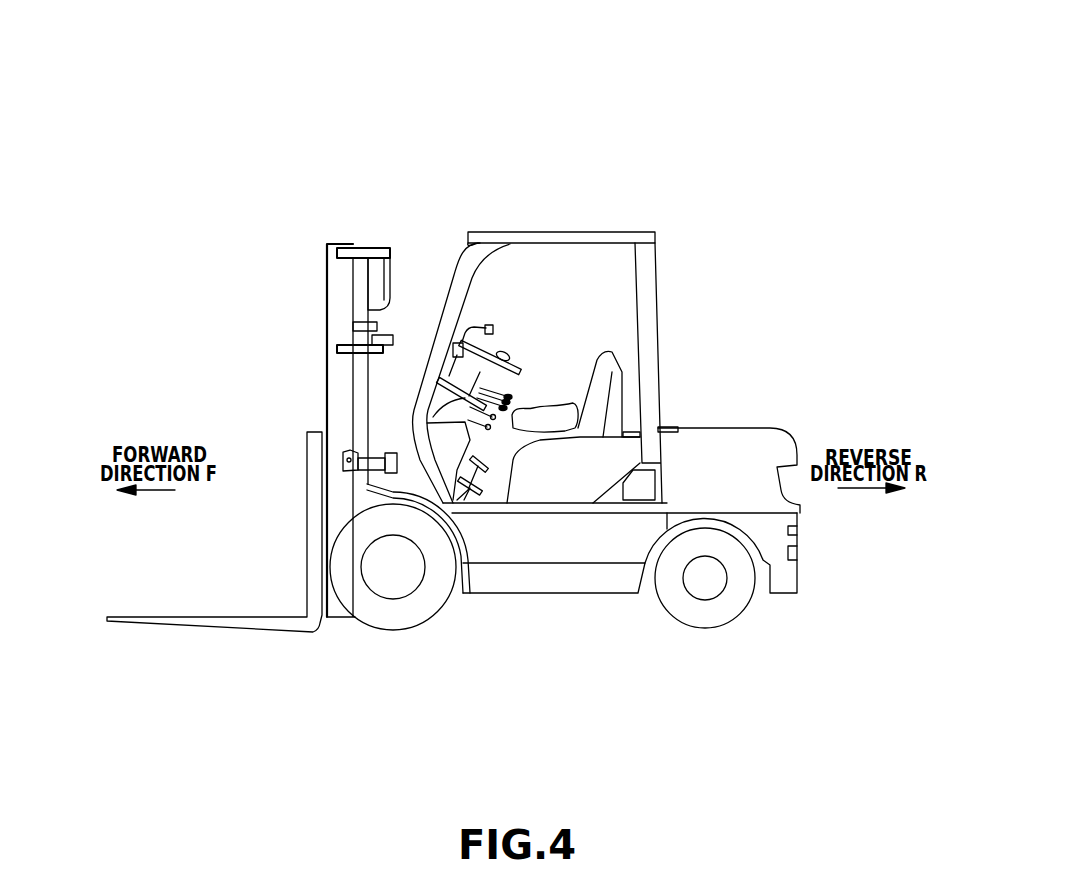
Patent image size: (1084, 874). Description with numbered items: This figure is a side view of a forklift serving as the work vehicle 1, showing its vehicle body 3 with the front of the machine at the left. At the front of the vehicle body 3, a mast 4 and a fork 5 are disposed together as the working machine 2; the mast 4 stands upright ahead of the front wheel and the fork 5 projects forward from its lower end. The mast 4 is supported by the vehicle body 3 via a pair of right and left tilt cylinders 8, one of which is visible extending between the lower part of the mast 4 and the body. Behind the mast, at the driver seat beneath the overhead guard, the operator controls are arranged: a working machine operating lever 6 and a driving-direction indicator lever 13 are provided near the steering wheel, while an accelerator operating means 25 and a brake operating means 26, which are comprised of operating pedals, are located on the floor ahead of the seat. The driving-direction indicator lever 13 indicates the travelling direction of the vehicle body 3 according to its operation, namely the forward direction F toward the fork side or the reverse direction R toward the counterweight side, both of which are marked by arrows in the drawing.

The work vehicle 1 is at (619, 88).
The working machine 2 is at (389, 189).
The vehicle body 3 is at (513, 582).
The mast 4 is at (337, 245).
The fork 5 is at (162, 617).
The working machine operating lever 6 is at (512, 400).
The tilt cylinder 8 is at (378, 450).
The driving-direction indicator lever 13 is at (490, 326).
The accelerator operating means 25 is at (505, 480).
The brake operating means 26 is at (478, 463).